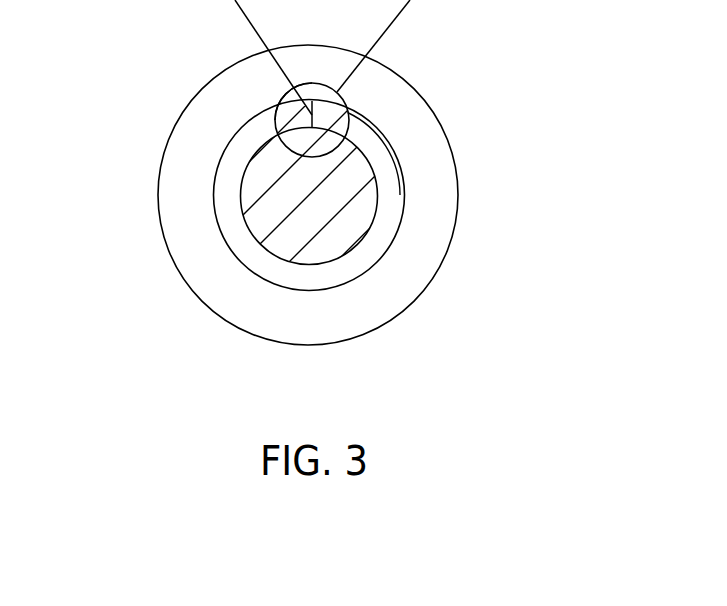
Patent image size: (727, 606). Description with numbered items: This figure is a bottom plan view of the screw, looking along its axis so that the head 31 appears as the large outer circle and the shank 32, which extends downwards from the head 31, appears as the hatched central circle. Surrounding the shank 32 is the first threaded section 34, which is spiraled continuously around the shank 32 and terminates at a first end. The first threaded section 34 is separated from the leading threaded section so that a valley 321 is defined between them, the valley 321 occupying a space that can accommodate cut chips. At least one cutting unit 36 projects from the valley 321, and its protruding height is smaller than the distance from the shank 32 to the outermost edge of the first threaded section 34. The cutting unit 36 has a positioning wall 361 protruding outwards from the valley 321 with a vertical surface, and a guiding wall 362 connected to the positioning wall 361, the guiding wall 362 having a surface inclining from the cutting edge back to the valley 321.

The head 31 is at (240, 298).
The shank 32 is at (323, 262).
The valley 321 is at (307, 118).
The first threaded section 34 is at (400, 223).
The cutting unit 36 is at (332, 123).
The positioning wall 361 is at (312, 113).
The guiding wall 362 is at (318, 117).